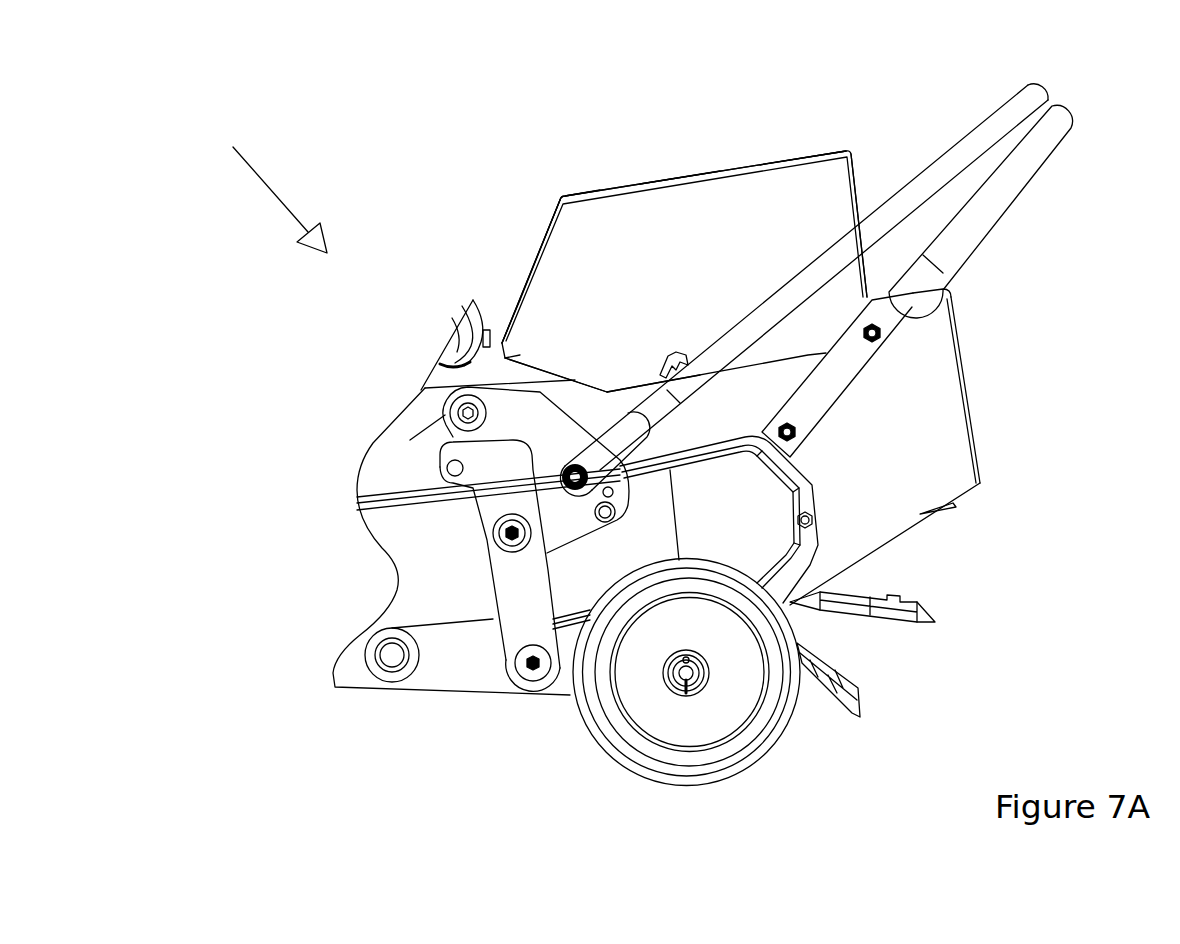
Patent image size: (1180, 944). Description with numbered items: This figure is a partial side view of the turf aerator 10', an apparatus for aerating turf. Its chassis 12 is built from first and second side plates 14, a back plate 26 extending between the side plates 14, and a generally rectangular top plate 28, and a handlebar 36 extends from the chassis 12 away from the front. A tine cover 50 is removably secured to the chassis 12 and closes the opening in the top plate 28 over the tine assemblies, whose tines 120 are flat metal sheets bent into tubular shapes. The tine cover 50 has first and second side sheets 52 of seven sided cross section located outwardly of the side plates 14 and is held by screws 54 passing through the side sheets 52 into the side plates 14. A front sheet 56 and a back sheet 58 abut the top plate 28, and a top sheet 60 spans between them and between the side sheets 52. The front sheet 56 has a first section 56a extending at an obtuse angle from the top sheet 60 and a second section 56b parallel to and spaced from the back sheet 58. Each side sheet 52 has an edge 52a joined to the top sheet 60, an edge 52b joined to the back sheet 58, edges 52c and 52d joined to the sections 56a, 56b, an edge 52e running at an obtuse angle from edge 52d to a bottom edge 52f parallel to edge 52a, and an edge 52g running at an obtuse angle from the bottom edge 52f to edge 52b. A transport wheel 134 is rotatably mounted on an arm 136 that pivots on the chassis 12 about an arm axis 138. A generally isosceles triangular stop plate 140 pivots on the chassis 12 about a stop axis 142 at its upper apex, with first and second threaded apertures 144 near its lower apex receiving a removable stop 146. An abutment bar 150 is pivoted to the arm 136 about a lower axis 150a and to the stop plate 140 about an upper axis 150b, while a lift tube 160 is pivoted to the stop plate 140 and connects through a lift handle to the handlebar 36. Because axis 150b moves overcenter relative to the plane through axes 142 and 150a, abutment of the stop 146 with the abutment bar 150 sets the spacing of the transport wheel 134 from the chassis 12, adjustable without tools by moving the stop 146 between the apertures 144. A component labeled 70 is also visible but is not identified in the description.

The turf aerator 10' is at (263, 182).
The chassis 12 is at (387, 448).
The side plates 14 is at (923, 453).
The back plate 26 is at (967, 380).
The top plate 28 is at (947, 287).
The handlebar 36 is at (1033, 152).
The tine cover 50 is at (730, 205).
The side sheets 52 is at (638, 212).
The edge 52a is at (678, 185).
The edge 52b is at (855, 207).
The edge 52c is at (560, 218).
The edge 52d is at (507, 347).
The edge 52e is at (582, 382).
The bottom edge 52f is at (647, 382).
The edge 52g is at (828, 338).
The screws 54 is at (678, 358).
The front sheet 56 is at (534, 265).
The first section 56a is at (538, 250).
The second section 56b is at (510, 354).
The back sheet 58 is at (857, 180).
The top sheet 60 is at (806, 158).
The strut 70 is at (873, 207).
The tines 120 is at (917, 625).
The transport wheels 134 is at (702, 783).
The arm 136 is at (452, 668).
The arm axis 138 is at (392, 657).
The stop plate 140 is at (510, 418).
The stop axis 142 is at (460, 409).
The threaded apertures 144 is at (613, 493).
The stop 146 is at (595, 511).
The abutment bar 150 is at (512, 587).
The lower axis 150a is at (532, 673).
The upper axis 150b is at (505, 535).
The lift tube 160 is at (1027, 97).